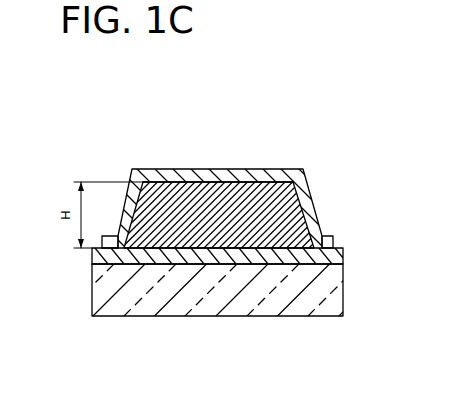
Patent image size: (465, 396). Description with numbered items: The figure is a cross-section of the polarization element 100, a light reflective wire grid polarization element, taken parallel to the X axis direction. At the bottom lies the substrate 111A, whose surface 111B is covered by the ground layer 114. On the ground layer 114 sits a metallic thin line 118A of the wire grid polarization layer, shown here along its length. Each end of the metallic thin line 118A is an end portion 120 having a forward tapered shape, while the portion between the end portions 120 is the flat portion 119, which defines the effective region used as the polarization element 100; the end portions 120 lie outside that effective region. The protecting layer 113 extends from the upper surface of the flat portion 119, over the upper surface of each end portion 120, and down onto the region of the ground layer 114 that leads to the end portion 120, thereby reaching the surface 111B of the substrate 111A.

The polarization element 100 is at (243, 112).
The substrate 111A is at (342, 296).
The surface of the substrate 111B is at (257, 264).
The ground layer 114 is at (342, 257).
The protecting layer 113 is at (171, 176).
The metallic thin line 118A is at (258, 183).
The flat portion 119 is at (208, 186).
The end portion 120 is at (116, 234).